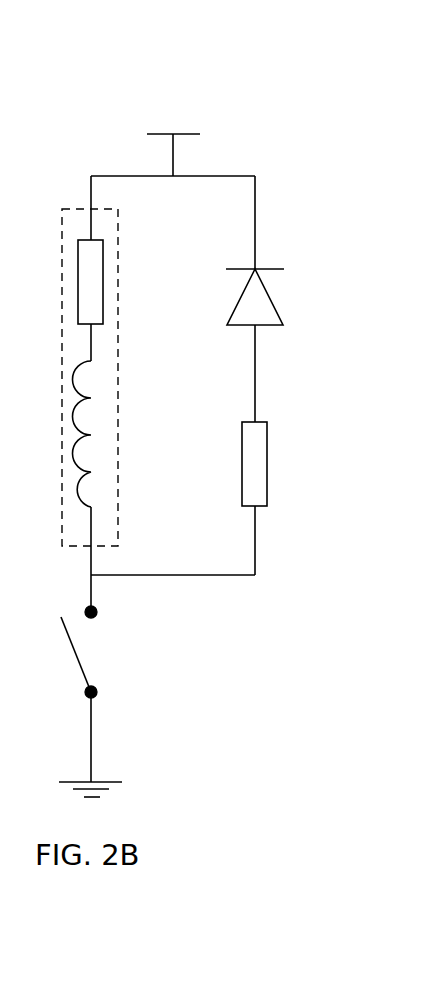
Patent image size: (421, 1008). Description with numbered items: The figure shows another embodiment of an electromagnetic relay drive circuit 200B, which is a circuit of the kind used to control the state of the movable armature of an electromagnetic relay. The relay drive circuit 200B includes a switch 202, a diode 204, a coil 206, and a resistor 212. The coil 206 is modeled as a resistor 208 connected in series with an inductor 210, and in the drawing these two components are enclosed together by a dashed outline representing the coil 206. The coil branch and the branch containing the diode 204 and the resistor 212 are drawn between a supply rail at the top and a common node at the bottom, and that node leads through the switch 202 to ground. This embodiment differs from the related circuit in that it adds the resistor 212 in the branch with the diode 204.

The relay drive circuit 200B is at (291, 106).
The switch 202 is at (86, 690).
The diode 204 is at (284, 269).
The coil 206 is at (118, 224).
The resistor 208 is at (103, 303).
The inductor 210 is at (91, 398).
The resistor 212 is at (267, 434).